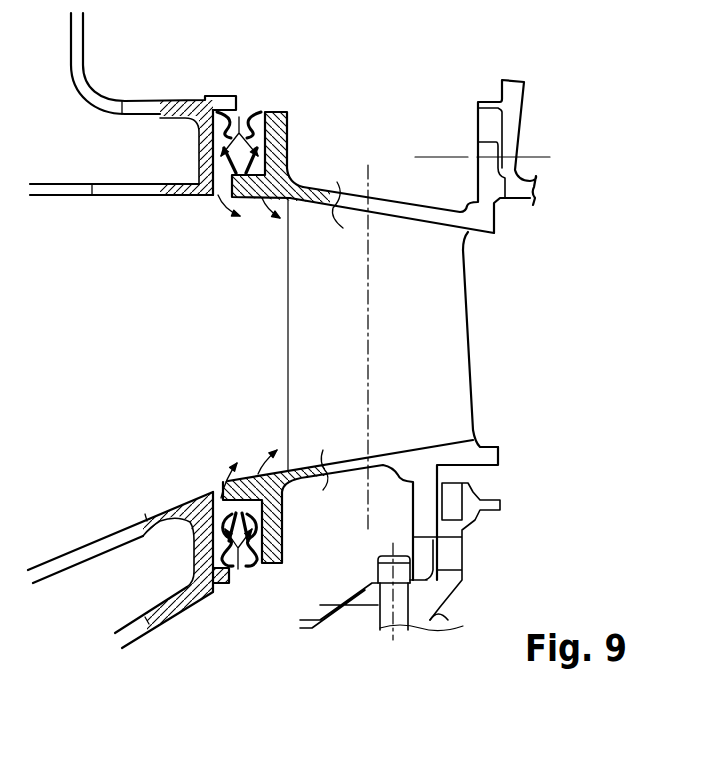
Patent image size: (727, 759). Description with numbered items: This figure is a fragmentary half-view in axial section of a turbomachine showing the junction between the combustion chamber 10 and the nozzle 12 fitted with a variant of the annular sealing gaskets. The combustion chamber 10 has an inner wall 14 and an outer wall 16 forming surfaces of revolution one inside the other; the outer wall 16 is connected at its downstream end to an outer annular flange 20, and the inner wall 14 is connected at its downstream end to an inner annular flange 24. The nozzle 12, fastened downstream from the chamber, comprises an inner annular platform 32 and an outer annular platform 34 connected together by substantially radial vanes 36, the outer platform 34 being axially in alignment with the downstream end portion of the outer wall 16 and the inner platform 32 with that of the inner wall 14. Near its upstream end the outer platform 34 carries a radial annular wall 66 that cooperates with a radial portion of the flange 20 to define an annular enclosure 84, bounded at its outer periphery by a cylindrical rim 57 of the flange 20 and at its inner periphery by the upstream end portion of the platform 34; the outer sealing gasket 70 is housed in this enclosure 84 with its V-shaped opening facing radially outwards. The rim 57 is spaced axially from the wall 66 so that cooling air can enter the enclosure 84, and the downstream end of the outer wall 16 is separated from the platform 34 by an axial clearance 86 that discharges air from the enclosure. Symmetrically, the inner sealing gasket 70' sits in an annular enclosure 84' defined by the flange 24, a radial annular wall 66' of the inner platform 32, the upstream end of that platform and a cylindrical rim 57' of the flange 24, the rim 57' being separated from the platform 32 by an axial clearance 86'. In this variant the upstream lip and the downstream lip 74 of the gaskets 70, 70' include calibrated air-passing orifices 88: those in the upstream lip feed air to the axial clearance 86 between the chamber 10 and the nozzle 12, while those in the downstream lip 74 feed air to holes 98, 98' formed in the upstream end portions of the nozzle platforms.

The combustion chamber 10 is at (70, 537).
The nozzle 12 is at (487, 343).
The inner wall 14 is at (103, 533).
The outer wall 16 is at (108, 197).
The outer annular flange 20 is at (140, 103).
The inner annular flange 24 is at (160, 620).
The inner annular platform 32 is at (387, 458).
The outer annular platform 34 is at (398, 214).
The radial vanes 36 is at (452, 284).
The cylindrical rim 57 is at (212, 83).
The cylindrical rim 57' is at (209, 590).
The radial annular wall 66 is at (301, 141).
The radial annular wall 66' is at (287, 527).
The outer sealing gasket 70 is at (270, 77).
The inner sealing gasket 70' is at (258, 594).
The downstream annular lip 74 is at (288, 136).
The annular enclosure 84 is at (309, 153).
The annular enclosure 84' is at (317, 549).
The axial clearance 86 is at (196, 233).
The axial clearance 86' is at (200, 453).
The calibrated air-passing orifices 88 is at (213, 143).
The holes 98 is at (248, 228).
The holes 98' is at (248, 432).